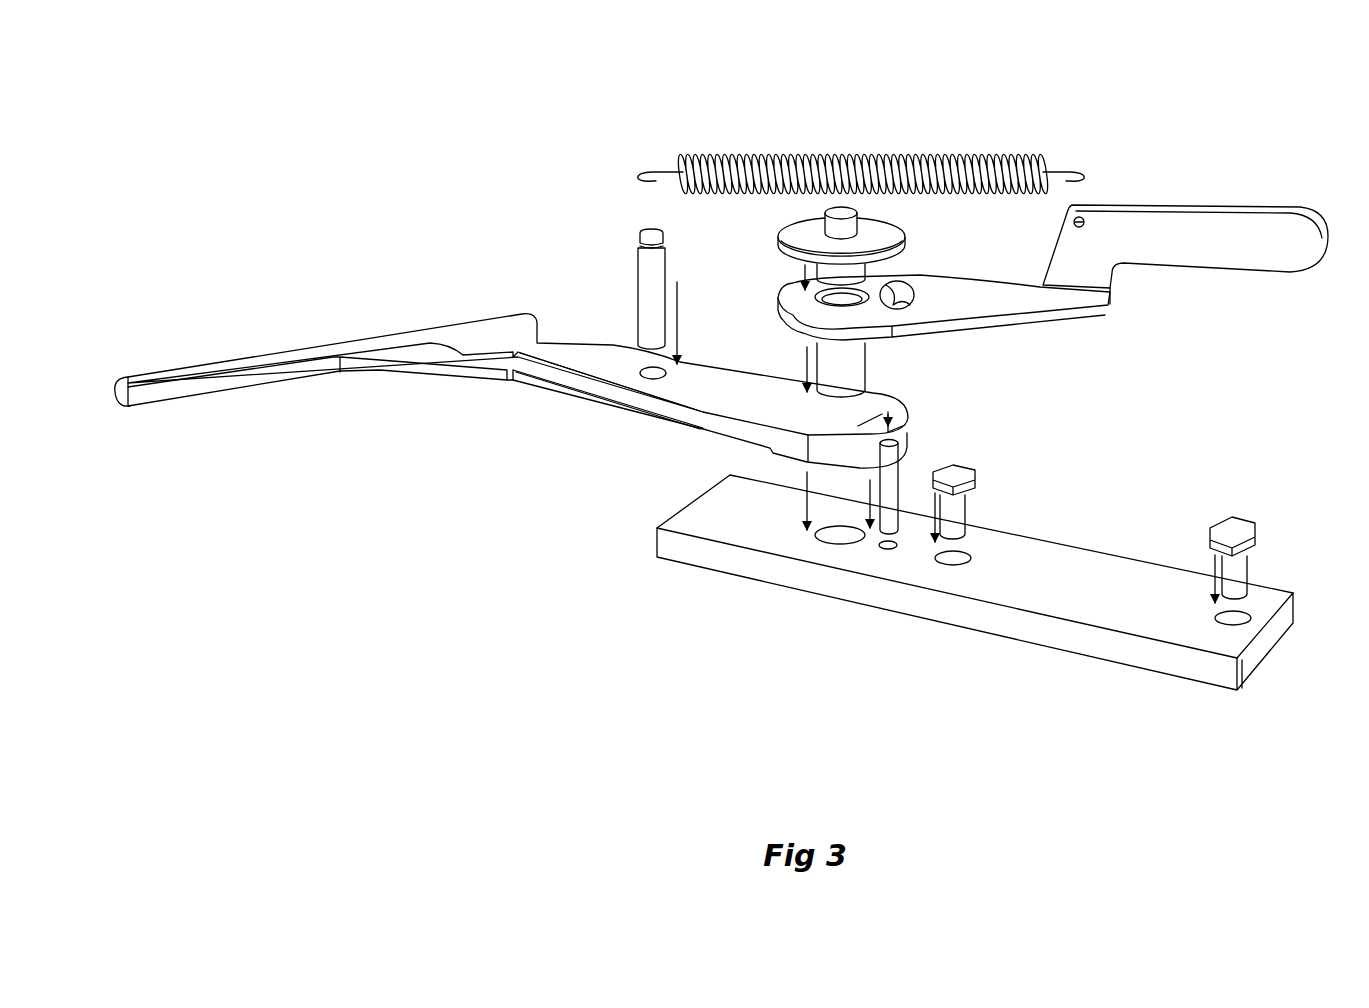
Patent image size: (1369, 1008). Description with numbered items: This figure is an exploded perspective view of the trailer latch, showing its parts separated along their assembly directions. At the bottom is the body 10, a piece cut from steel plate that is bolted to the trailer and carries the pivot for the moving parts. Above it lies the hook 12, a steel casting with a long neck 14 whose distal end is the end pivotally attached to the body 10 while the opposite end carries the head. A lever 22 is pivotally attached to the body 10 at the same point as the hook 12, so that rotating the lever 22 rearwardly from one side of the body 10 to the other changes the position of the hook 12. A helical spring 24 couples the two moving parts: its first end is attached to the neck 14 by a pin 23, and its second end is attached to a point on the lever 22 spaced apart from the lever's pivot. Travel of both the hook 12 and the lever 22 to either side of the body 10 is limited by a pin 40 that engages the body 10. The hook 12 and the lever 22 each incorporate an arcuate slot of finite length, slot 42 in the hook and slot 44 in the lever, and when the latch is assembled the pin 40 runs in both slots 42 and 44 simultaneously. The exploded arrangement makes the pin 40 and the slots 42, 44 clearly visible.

The body 10 is at (1117, 567).
The hook 12 is at (511, 357).
The neck 14 is at (633, 398).
The lever 22 is at (1240, 205).
The pin 23 is at (642, 258).
The helical spring 24 is at (887, 153).
The pin 40 is at (902, 470).
The arcuate slot 42 is at (905, 420).
The arcuate slot 44 is at (897, 300).